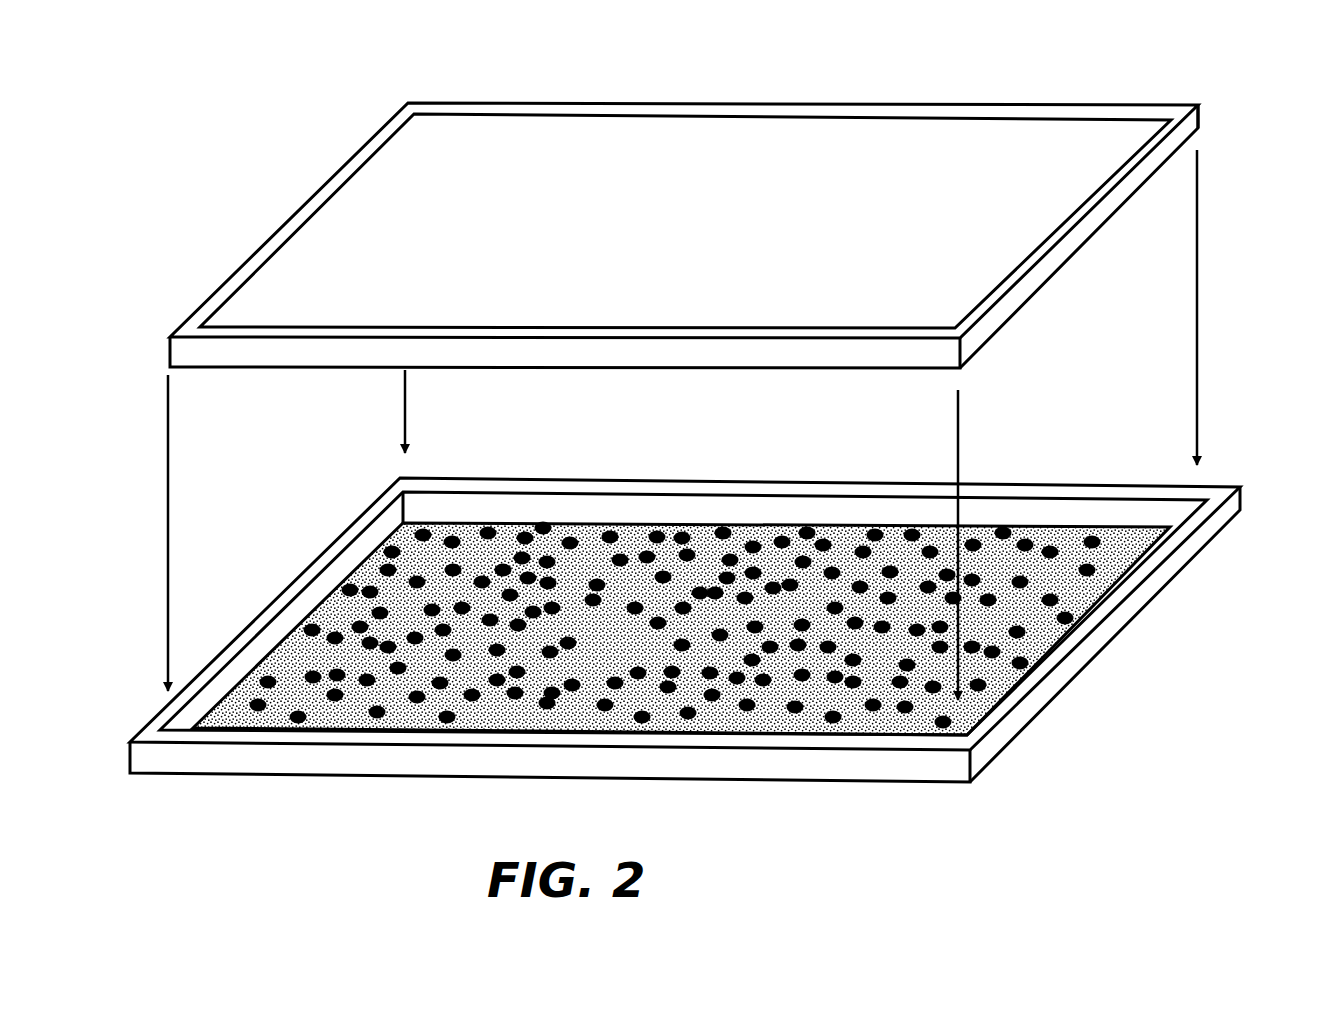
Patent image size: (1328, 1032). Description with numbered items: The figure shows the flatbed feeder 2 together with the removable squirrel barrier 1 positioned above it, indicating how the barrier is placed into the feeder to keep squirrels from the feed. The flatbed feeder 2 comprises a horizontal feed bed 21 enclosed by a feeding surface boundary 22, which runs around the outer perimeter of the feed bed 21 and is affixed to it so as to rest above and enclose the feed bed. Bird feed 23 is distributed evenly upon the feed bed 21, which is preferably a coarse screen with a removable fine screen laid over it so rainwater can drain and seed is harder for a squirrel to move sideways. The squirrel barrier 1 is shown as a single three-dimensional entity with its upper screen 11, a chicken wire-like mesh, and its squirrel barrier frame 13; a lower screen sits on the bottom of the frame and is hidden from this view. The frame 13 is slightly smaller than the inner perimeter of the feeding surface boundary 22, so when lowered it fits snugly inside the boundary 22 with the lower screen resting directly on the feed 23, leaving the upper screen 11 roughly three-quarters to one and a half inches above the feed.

The removable squirrel barrier 1 is at (745, 199).
The upper screen 11 is at (582, 135).
The squirrel barrier frame 13 is at (1190, 127).
The flatbed feeder 2 is at (723, 596).
The feed bed 21 is at (595, 563).
The feeding surface boundary 22 is at (1232, 510).
The bird feed 23 is at (505, 563).